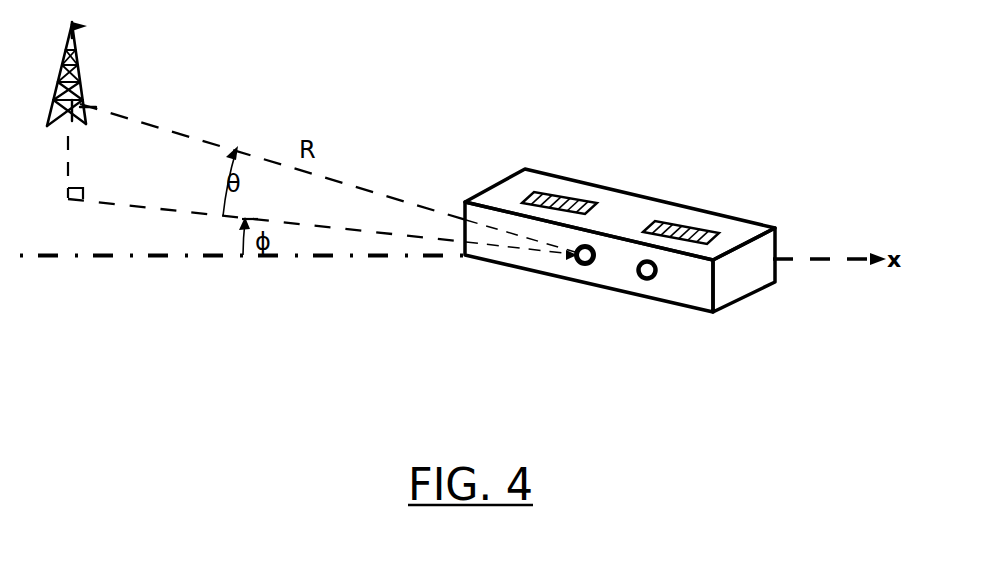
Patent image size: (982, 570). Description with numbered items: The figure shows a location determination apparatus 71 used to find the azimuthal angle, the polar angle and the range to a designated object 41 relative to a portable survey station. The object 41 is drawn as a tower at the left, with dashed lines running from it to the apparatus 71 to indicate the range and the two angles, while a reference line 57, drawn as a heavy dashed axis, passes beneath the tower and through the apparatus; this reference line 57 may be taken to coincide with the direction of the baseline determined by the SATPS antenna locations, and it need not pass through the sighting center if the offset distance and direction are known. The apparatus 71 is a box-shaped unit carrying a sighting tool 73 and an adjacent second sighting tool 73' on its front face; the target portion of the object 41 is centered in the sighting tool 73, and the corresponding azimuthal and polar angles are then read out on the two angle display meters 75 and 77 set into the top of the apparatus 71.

The object 41 is at (75, 55).
The reference line 57 is at (166, 257).
The location determination apparatus 71 is at (747, 277).
The sighting tool 73 is at (543, 294).
The sighting tool 73' is at (610, 310).
The angle display meter 75 is at (548, 195).
The angle display meter 77 is at (670, 221).